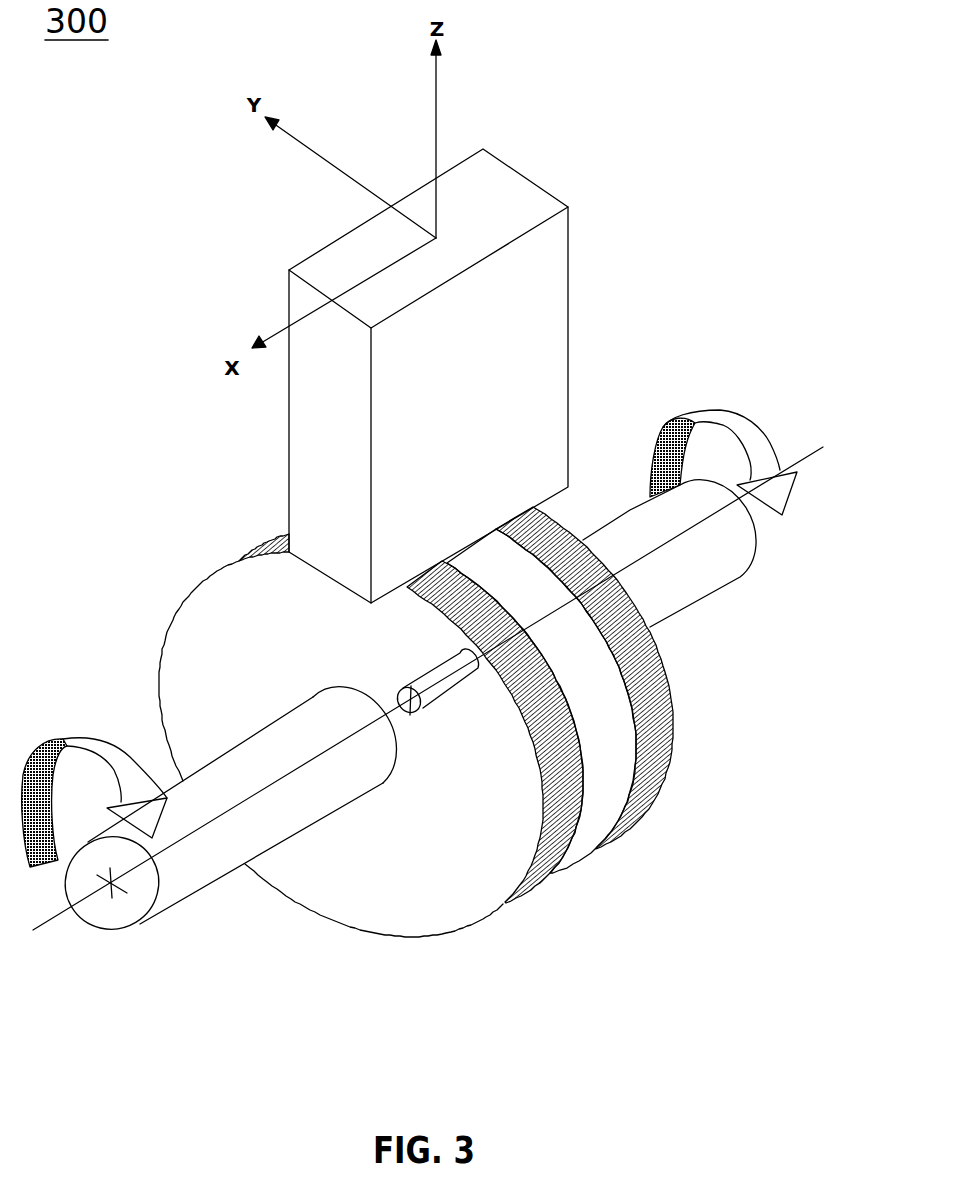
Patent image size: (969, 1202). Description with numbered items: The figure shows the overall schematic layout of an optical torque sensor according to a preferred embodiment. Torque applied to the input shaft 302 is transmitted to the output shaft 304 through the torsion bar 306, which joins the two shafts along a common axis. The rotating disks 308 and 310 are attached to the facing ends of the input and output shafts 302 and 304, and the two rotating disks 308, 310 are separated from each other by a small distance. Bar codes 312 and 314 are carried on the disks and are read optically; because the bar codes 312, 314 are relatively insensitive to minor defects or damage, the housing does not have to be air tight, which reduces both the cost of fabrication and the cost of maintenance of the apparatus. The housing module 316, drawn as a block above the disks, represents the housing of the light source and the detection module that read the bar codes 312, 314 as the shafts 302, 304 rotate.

The input shaft 302 is at (128, 905).
The output shaft 304 is at (710, 547).
The torsion bar 306 is at (438, 673).
The rotating disk 308 is at (413, 903).
The rotating disk 310 is at (598, 770).
The bar code 312 is at (557, 870).
The bar code 314 is at (673, 717).
The housing module 316 is at (568, 350).